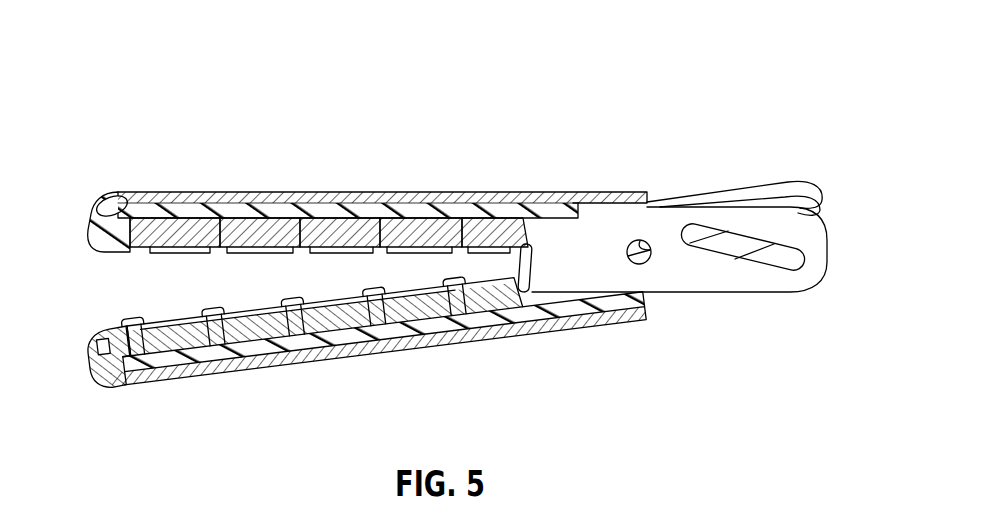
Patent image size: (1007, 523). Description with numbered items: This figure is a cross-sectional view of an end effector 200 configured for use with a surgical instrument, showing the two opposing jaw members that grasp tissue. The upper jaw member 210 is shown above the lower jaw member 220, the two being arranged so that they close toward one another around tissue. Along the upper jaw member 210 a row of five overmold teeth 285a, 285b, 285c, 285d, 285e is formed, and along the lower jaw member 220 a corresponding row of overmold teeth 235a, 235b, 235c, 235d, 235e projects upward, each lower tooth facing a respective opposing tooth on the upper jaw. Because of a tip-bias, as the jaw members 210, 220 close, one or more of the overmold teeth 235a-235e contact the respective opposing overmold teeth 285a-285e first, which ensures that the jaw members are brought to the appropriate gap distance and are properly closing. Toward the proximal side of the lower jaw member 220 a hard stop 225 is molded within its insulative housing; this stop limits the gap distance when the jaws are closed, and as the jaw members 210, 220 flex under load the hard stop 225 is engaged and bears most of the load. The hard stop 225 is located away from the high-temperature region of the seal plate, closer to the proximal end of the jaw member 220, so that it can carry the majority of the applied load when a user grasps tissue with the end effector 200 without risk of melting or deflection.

The end effector 200 is at (189, 55).
The jaw member 210 is at (133, 191).
The jaw member 220 is at (152, 378).
The hard stop 225 is at (538, 278).
The overmold tooth 285a is at (146, 226).
The overmold tooth 285b is at (228, 224).
The overmold tooth 285c is at (310, 222).
The overmold tooth 285d is at (394, 214).
The overmold tooth 285e is at (463, 246).
The overmold tooth 235a is at (126, 334).
The overmold tooth 235b is at (210, 310).
The overmold tooth 235c is at (291, 298).
The overmold tooth 235d is at (377, 292).
The overmold tooth 235e is at (459, 282).